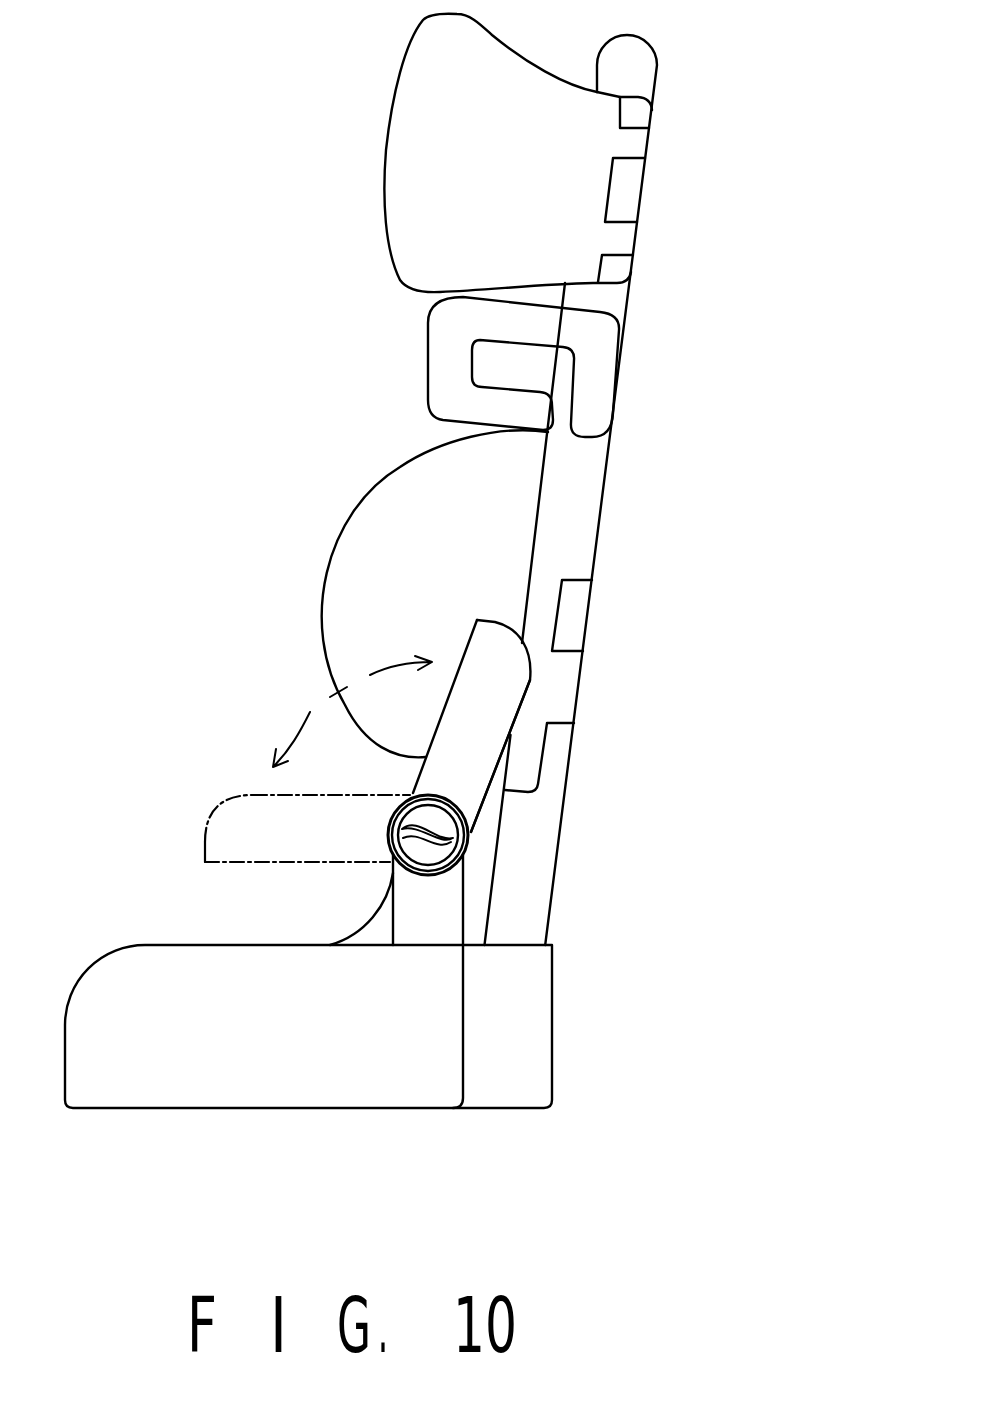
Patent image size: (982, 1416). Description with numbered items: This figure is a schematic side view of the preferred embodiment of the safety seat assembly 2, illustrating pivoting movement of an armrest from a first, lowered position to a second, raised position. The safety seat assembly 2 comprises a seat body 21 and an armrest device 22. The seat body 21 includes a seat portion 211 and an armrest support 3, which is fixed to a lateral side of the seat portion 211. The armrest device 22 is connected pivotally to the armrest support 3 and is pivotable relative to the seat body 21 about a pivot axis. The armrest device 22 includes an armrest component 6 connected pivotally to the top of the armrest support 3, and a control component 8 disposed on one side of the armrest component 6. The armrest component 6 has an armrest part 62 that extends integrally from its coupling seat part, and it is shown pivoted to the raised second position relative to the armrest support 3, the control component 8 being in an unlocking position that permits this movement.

The safety seat assembly 2 is at (357, 407).
The seat body 21 is at (680, 397).
The armrest device 22 is at (342, 826).
The seat portion 211 is at (245, 1027).
The armrest support 3 is at (418, 903).
The armrest component 6 is at (537, 595).
The armrest part 62 is at (474, 740).
The control component 8 is at (428, 857).